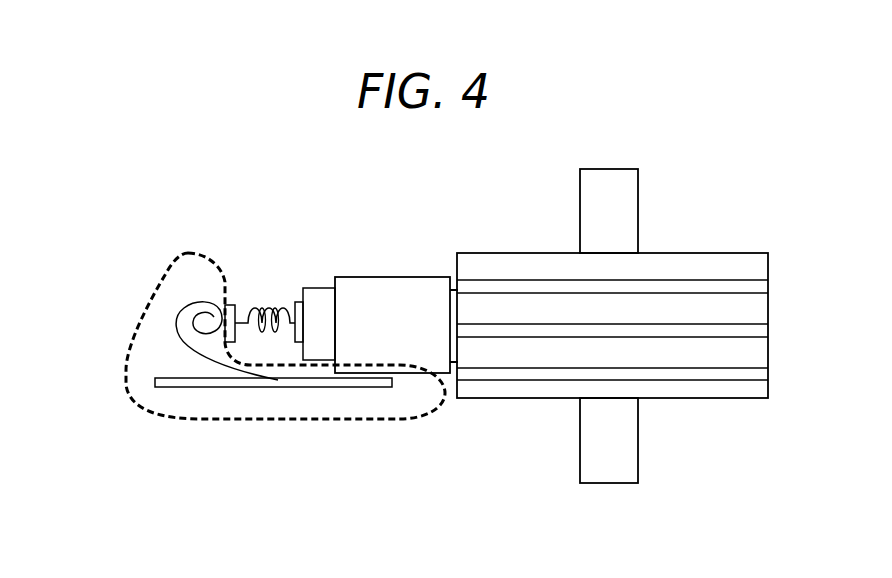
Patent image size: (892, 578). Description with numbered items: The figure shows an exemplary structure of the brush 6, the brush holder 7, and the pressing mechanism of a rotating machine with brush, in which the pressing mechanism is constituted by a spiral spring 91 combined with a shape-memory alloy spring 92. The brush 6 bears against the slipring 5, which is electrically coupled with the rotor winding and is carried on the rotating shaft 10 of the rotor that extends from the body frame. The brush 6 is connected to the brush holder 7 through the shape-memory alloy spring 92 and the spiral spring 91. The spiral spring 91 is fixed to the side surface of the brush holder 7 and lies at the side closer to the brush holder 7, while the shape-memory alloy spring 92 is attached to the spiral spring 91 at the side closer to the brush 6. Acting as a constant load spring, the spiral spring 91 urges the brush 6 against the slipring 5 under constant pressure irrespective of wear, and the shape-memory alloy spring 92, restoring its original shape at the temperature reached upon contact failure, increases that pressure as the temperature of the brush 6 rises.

The slipring 5 is at (522, 398).
The rotating shaft 10 is at (632, 205).
The brush 6 is at (320, 288).
The brush holder 7 is at (417, 277).
The spiral spring 91 is at (152, 285).
The shape-memory alloy spring 92 is at (271, 338).